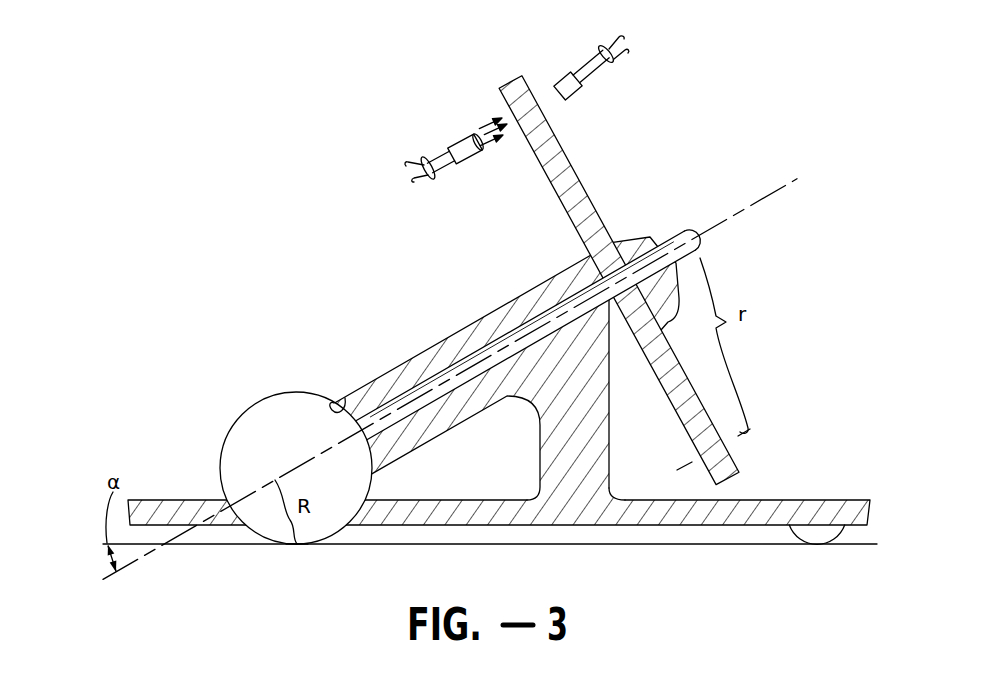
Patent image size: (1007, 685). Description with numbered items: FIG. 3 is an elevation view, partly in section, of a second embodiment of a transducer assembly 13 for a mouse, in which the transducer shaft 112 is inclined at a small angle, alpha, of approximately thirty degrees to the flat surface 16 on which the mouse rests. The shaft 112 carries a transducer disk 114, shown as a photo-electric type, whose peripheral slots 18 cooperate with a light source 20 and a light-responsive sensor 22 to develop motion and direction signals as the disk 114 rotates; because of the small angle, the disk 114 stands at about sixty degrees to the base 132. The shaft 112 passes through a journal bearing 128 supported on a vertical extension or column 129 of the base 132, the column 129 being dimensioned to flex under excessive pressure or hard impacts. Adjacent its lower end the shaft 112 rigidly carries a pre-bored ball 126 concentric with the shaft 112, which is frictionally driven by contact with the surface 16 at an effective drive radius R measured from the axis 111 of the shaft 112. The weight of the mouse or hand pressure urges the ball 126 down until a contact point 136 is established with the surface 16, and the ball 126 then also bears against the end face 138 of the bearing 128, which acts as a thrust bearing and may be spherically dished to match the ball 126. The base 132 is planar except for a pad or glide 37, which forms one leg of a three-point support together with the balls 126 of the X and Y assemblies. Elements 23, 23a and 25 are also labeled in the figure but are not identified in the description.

The transducer assembly 13 is at (502, 50).
The surface 16 is at (557, 545).
The peripheral slots 18 is at (537, 98).
The light source 20 is at (457, 142).
The light-responsive sensor 22 is at (556, 82).
The hose coupling 23 is at (604, 46).
The hose coupling 23a is at (425, 158).
The rod end cap 25 is at (697, 229).
The pad 37 is at (815, 545).
The axis 111 is at (104, 584).
The shaft 112 is at (663, 242).
The transducer disk 114 is at (580, 180).
The ball 126 is at (310, 392).
The journal bearing 128 is at (514, 291).
The vertical extension 129 is at (610, 400).
The base 132 is at (455, 499).
The contact point 136 is at (298, 545).
The end face 138 is at (338, 396).